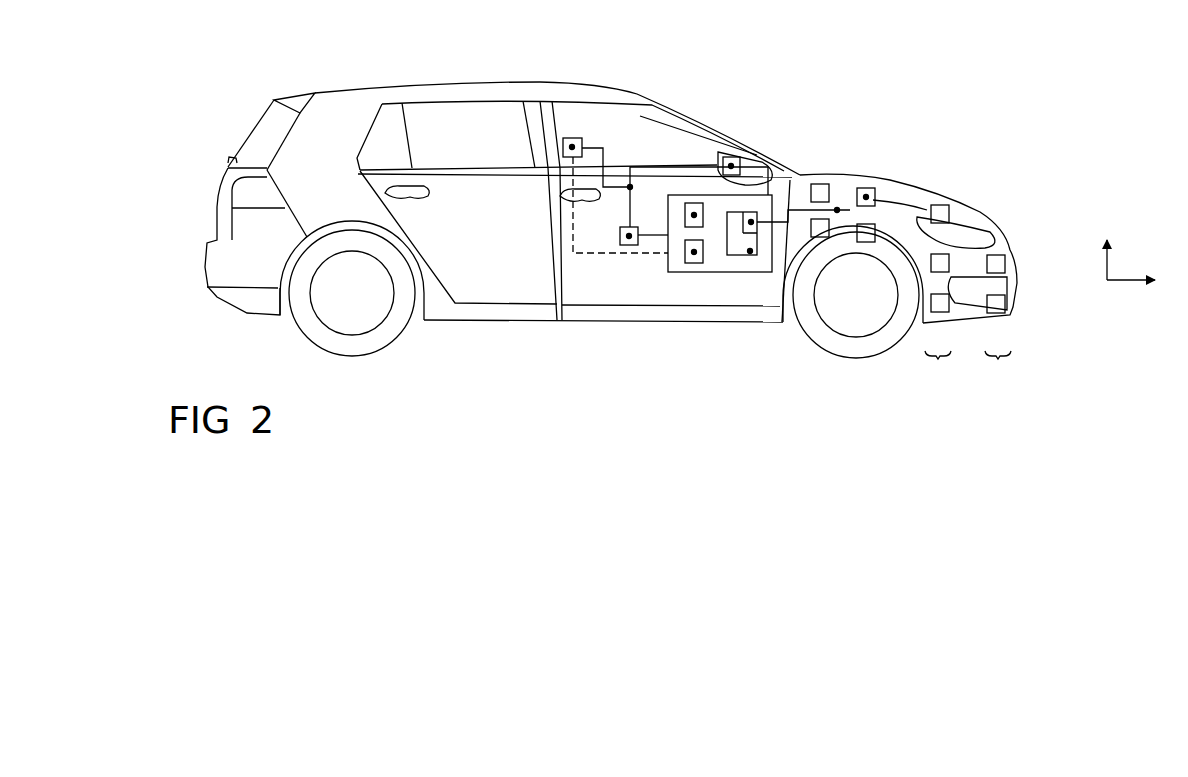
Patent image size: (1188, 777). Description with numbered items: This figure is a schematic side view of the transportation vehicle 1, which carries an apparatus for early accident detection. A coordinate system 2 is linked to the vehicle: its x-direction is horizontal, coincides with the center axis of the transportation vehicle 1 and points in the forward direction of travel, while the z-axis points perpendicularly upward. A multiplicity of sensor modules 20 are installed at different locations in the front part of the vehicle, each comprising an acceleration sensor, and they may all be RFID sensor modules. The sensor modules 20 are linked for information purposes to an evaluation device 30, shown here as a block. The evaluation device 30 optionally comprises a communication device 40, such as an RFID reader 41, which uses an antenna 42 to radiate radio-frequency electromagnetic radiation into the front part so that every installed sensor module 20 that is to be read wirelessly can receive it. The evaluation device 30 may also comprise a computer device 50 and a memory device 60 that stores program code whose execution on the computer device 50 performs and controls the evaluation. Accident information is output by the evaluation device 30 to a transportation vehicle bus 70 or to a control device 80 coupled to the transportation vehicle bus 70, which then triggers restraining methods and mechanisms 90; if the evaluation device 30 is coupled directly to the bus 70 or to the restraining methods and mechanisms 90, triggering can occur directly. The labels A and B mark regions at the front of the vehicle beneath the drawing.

The transportation vehicle 1 is at (475, 66).
The coordinate system 2 is at (1116, 271).
The sensor modules 20 is at (866, 196).
The evaluation device 30 is at (723, 276).
The communication device 40 is at (750, 253).
The RFID reader 41 is at (752, 220).
The antenna 42 is at (837, 208).
The computer device 50 is at (692, 218).
The memory device 60 is at (693, 255).
The transportation vehicle bus 70 is at (629, 185).
The control device 80 is at (628, 238).
The restraining methods and mechanisms 90 is at (571, 141).
The front region A is at (998, 368).
The region B is at (938, 368).